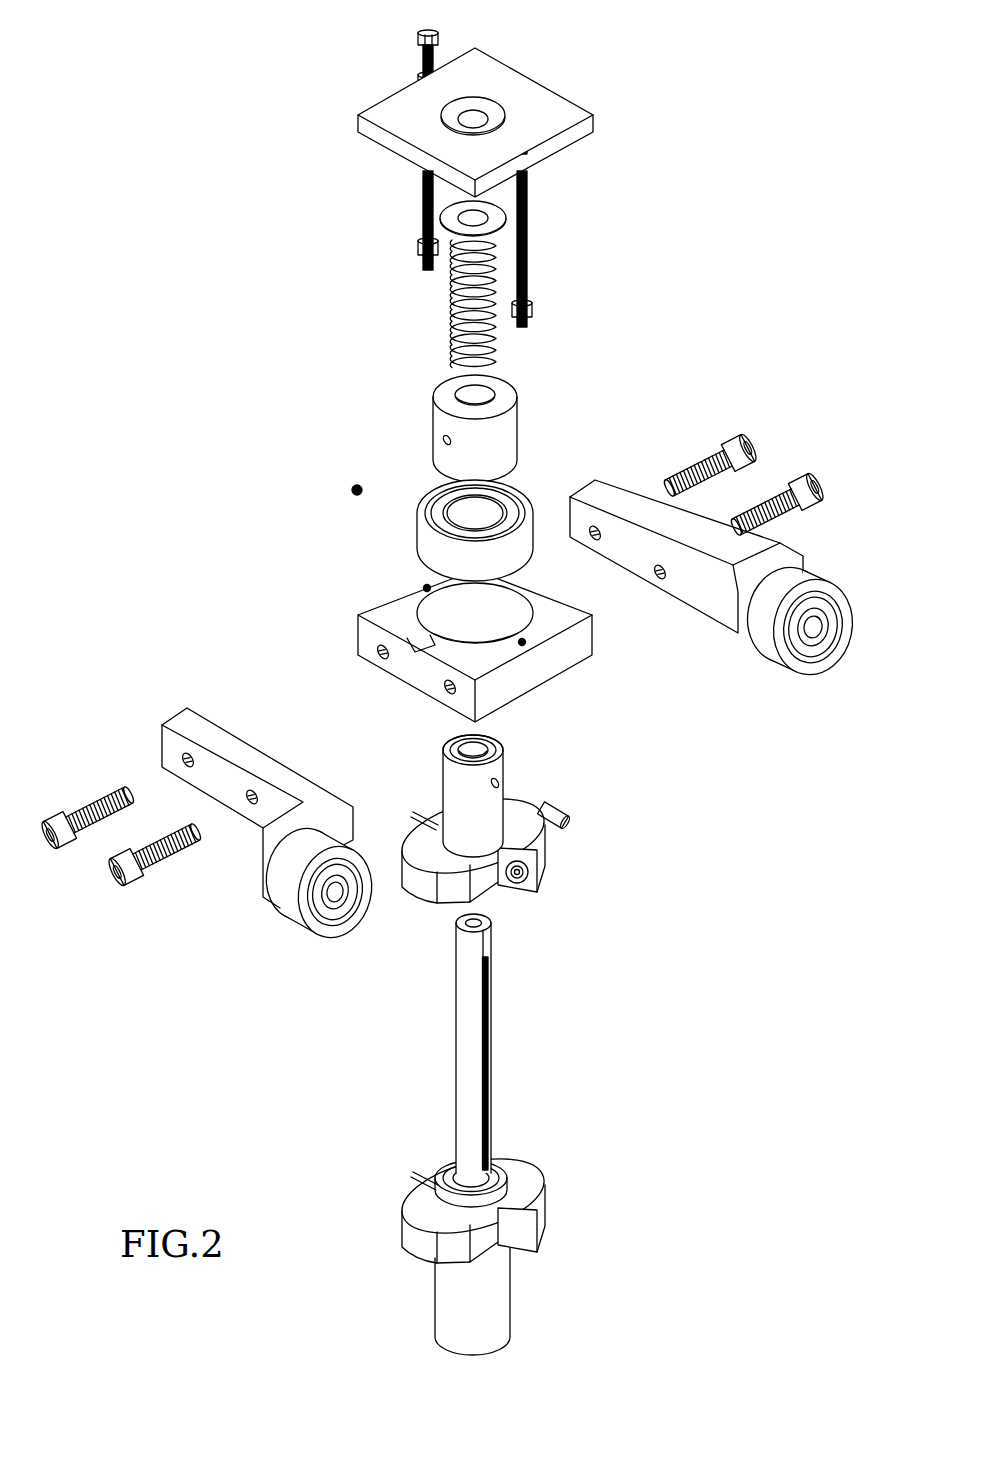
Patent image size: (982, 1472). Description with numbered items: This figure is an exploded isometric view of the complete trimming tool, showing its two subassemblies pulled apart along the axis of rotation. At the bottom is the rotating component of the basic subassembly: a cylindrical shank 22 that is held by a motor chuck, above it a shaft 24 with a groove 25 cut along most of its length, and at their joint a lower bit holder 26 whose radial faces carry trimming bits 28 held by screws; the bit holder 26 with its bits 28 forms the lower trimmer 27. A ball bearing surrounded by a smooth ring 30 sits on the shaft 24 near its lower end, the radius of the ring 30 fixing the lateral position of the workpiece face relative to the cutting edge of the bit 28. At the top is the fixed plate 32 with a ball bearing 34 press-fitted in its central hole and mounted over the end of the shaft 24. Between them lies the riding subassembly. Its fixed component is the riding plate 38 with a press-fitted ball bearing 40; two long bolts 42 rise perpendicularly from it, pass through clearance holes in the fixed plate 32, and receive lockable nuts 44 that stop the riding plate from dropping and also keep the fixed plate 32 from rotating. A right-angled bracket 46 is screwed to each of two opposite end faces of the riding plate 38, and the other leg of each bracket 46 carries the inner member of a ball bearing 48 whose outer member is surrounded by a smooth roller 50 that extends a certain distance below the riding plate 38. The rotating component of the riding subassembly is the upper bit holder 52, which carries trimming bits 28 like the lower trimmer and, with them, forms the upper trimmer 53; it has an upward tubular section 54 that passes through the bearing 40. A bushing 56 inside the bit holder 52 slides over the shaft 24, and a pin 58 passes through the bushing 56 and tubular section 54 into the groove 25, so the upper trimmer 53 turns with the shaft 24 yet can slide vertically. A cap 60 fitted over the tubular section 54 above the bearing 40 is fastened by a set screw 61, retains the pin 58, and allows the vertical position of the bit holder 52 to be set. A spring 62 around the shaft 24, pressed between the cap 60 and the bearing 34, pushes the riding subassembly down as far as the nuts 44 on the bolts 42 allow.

The cylindrical shank 22 is at (487, 1312).
The shaft 24 is at (485, 1043).
The groove 25 is at (492, 1015).
The lower bit holder 26 is at (530, 1192).
The lower trimmer 27 is at (575, 1178).
The trimming bit 28 is at (527, 890).
The ring 30 is at (507, 1163).
The fixed plate 32 is at (498, 98).
The ball bearing 34 is at (481, 110).
The riding plate 38 is at (572, 660).
The ball bearing 40 is at (425, 540).
The long bolt 42 is at (420, 190).
The lockable nut 44 is at (420, 80).
The right-angled bracket 46 is at (615, 503).
The ball bearing 48 is at (805, 660).
The roller 50 is at (757, 635).
The upper bit holder 52 is at (543, 862).
The upper trimmer 53 is at (550, 985).
The tubular section 54 is at (435, 779).
The bushing 56 is at (458, 737).
The pin 58 is at (592, 793).
The cap 60 is at (510, 433).
The set screw 61 is at (352, 483).
The spring 62 is at (453, 325).